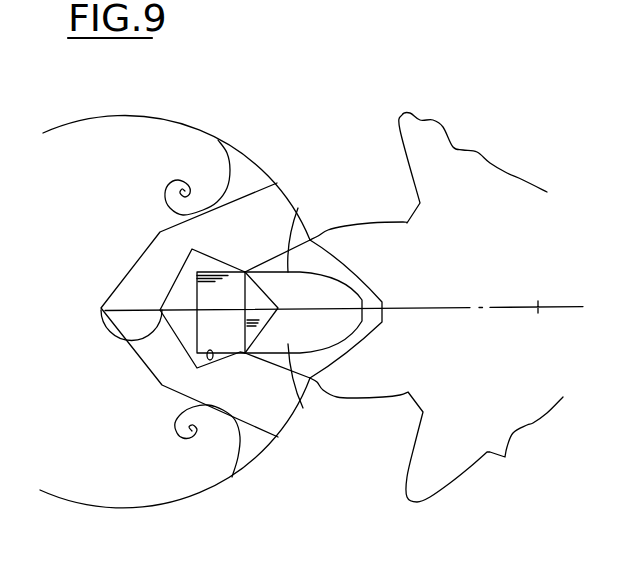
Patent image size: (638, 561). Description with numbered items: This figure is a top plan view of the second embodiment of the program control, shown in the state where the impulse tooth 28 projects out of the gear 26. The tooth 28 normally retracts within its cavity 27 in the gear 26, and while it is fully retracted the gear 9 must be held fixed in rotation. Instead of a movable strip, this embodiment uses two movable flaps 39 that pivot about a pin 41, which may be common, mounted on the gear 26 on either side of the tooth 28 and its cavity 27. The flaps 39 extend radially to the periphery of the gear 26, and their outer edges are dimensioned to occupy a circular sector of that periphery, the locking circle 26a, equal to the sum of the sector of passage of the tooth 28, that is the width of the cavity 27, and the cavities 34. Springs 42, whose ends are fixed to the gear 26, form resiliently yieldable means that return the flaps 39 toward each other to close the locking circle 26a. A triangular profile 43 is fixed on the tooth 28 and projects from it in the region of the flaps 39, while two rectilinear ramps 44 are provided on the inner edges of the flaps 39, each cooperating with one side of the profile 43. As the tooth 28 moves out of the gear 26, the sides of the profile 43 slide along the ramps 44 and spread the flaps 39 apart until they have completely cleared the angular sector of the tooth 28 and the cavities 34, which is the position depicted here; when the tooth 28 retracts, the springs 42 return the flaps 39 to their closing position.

The gear 9 is at (523, 143).
The gear 26 is at (76, 171).
The locking circle 26a is at (250, 155).
The cavity 27 is at (219, 340).
The impulse tooth 28 is at (326, 302).
The cavities 34 is at (298, 250).
The movable flaps 39 is at (278, 205).
The pin 41 is at (112, 337).
The springs 42 is at (226, 160).
The triangular profile 43 is at (262, 358).
The rectilinear ramps 44 is at (213, 260).